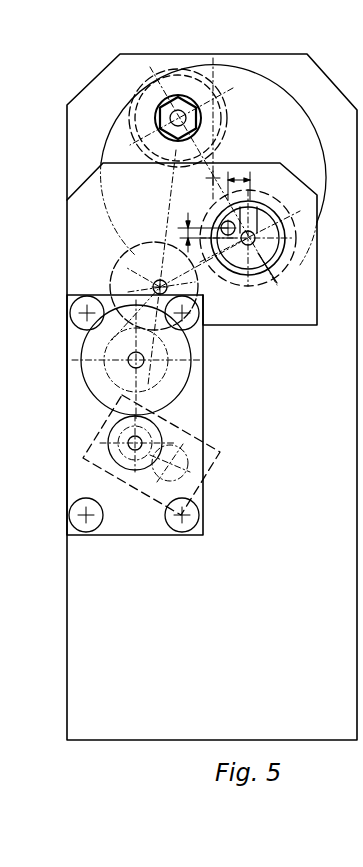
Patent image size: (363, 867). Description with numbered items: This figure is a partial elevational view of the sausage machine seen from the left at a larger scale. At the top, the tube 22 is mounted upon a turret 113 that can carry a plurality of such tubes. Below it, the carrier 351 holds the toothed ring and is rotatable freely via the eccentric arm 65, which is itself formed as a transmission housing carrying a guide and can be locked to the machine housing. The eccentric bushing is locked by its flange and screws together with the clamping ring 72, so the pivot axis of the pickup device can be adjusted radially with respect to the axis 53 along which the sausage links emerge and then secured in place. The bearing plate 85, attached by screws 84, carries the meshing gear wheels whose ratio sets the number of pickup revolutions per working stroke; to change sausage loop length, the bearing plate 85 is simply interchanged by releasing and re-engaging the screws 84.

The tube 22 is at (177, 110).
The turret 113 is at (252, 84).
The axis 53 is at (212, 211).
The clamping ring 72 is at (290, 249).
The carrier 351 is at (263, 331).
The bearing plate 85 is at (198, 400).
The eccentric arm 65 is at (212, 449).
The screws 84 is at (72, 321).